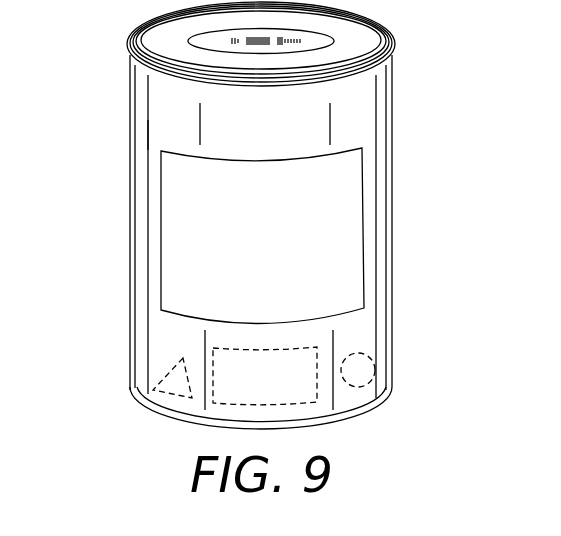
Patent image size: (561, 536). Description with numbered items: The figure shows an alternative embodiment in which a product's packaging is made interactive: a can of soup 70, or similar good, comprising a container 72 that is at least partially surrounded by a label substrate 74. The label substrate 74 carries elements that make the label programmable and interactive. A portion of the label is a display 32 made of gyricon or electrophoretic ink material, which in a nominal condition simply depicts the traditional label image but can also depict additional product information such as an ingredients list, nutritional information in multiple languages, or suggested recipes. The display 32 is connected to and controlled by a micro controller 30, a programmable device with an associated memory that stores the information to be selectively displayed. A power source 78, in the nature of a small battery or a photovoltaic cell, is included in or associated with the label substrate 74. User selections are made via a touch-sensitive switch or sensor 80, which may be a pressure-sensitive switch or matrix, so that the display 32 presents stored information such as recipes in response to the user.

The can of soup 70 is at (241, 228).
The container 72 is at (130, 35).
The label substrate 74 is at (161, 136).
The display 32 is at (360, 191).
The micro controller 30 is at (302, 405).
The power source 78 is at (378, 370).
The touch-sensitive switch or sensor 80 is at (155, 379).